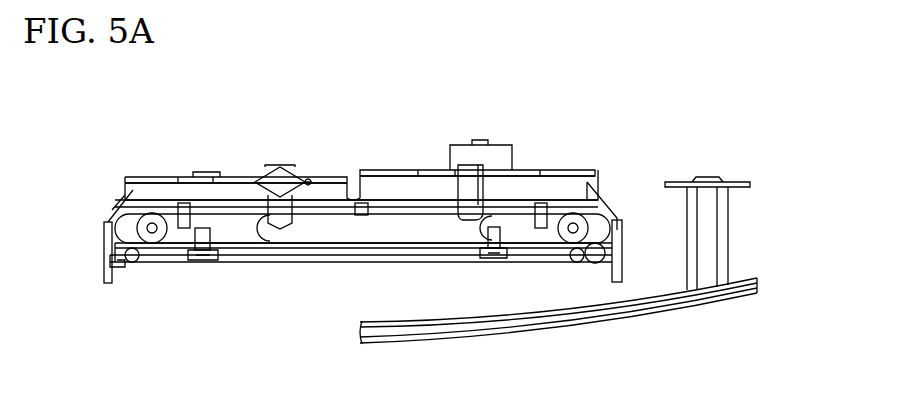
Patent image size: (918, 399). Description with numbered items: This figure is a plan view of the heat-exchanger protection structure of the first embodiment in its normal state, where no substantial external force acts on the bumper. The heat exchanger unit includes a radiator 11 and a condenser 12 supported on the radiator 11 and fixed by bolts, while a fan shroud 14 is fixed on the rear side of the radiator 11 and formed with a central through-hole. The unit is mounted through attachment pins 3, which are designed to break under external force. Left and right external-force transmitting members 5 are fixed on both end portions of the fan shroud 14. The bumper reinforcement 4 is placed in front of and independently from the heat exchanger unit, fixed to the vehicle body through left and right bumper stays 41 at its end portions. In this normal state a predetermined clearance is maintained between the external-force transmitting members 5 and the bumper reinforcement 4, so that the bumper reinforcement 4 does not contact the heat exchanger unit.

The attachment pin 3 is at (153, 224).
The bumper reinforcement member 4 is at (577, 323).
The external-force transmitting member 5 is at (103, 262).
The radiator 11 is at (230, 235).
The condenser 12 is at (277, 262).
The fan shroud 14 is at (572, 180).
The bumper stay 41 is at (730, 247).